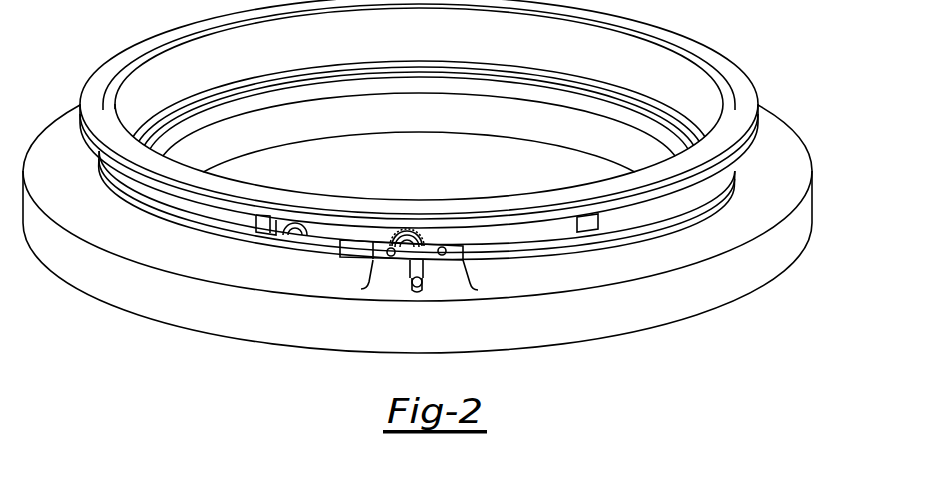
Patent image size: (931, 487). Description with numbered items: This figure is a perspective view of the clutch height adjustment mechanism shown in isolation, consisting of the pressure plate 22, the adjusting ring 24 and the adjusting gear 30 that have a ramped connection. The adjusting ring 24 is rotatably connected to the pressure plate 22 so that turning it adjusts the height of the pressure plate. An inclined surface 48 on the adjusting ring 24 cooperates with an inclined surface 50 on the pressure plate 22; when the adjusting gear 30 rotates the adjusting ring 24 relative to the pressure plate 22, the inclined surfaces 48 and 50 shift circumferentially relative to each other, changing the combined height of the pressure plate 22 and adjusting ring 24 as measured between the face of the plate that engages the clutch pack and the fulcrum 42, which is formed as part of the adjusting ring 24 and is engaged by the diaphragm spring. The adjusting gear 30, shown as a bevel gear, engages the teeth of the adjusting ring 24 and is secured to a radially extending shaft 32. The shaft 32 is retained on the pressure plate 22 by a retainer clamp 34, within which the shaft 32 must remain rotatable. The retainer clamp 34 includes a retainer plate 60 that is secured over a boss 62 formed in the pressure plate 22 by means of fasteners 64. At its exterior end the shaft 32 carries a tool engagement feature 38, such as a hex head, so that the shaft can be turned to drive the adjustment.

The pressure plate 22 is at (775, 125).
The adjusting ring 24 is at (733, 75).
The adjusting gear 30 is at (392, 243).
The shaft 32 is at (407, 273).
The retainer clamp 34 is at (473, 248).
The tool engagement feature 38 is at (420, 292).
The fulcrum 42 is at (313, 200).
The inclined surface 48 is at (338, 240).
The inclined surface 50 is at (295, 228).
The retainer plate 60 is at (432, 243).
The boss 62 is at (445, 275).
The fasteners 64 is at (447, 247).